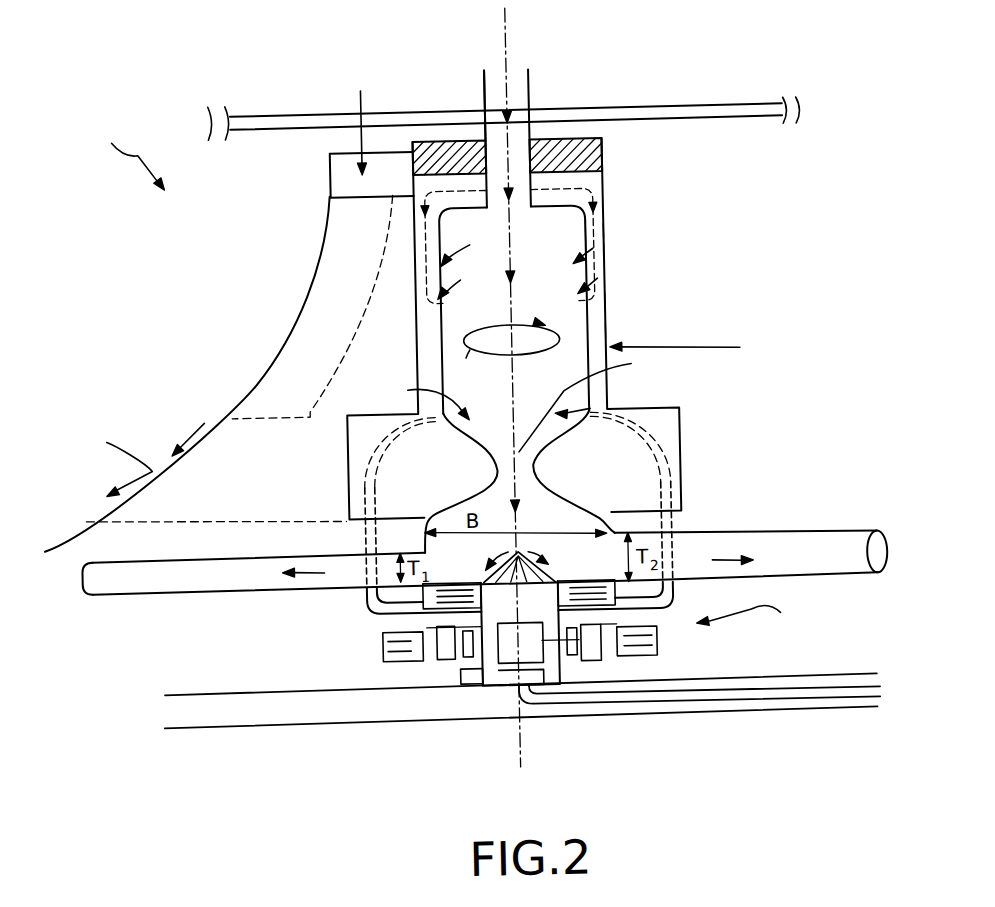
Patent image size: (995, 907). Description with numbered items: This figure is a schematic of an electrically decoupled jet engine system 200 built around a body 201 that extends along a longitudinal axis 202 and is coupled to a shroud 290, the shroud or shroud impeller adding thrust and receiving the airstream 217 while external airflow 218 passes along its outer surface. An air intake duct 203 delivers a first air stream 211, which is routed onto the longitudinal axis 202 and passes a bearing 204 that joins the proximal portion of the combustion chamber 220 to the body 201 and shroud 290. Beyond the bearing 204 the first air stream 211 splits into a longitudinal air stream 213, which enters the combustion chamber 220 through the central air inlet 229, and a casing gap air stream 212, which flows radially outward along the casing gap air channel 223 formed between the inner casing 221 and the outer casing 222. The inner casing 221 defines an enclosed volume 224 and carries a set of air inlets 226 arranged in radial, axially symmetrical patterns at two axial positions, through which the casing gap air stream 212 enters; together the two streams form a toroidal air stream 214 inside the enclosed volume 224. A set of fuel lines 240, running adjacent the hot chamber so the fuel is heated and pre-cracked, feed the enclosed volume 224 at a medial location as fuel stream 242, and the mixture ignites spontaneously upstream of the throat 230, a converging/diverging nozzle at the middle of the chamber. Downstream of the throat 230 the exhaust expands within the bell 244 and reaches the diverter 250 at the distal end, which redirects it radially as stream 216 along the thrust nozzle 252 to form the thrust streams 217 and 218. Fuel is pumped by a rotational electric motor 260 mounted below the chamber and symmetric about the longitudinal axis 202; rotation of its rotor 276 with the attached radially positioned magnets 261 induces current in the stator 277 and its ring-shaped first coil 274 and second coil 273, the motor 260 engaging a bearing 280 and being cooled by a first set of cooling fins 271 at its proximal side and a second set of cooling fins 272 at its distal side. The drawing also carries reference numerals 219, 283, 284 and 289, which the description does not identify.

The electrically decoupled jet engine system 200 is at (124, 152).
The body 201 is at (749, 123).
The longitudinal axis 202 is at (521, 10).
The air intake duct 203 is at (544, 90).
The bearing 204 is at (613, 151).
The first air stream 211 is at (492, 98).
The casing gap air stream 212 is at (605, 192).
The longitudinal air stream 213 is at (516, 252).
The toroidal air stream 214 is at (508, 354).
The radially diverted combustion exhaust stream 216 is at (530, 550).
The thrust stream 217 is at (316, 574).
The thrust stream 218 is at (728, 563).
The side block 219 is at (366, 104).
The combustion chamber 220 is at (569, 326).
The inner casing 221 is at (605, 241).
The outer casing 222 is at (605, 297).
The casing gap air channel 223 is at (605, 328).
The enclosed volume 224 is at (605, 235).
The set of air inlets 226 is at (516, 240).
The central air inlet 229 is at (532, 205).
The throat 230 is at (598, 401).
The set of fuel lines 240 is at (633, 440).
The fuel stream 242 is at (413, 395).
The bell 244 is at (611, 502).
The diverter 250 is at (620, 536).
The thrust nozzle 252 is at (846, 554).
The rotational electric motor 260 is at (599, 570).
The set of radially positioned magnets 261 is at (569, 658).
The first set of cooling fins 271 is at (419, 587).
The second set of cooling fins 272 is at (653, 636).
The second coil 273 is at (430, 628).
The first coil 274 is at (443, 660).
The rotor 276 is at (568, 654).
The stator 277 is at (506, 688).
The bearing 280 is at (473, 686).
The lower rail top 283 is at (838, 694).
The lower support rail 284 is at (764, 720).
The flow along housing 289 is at (132, 455).
The shroud 290 is at (287, 337).